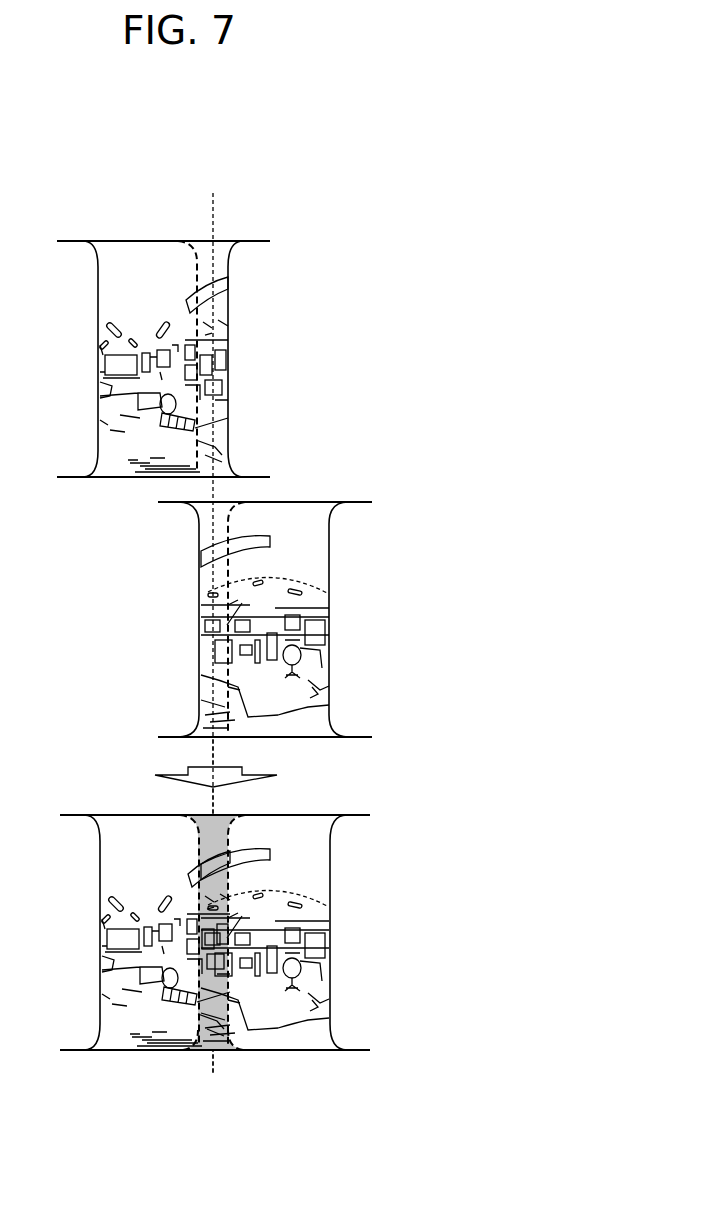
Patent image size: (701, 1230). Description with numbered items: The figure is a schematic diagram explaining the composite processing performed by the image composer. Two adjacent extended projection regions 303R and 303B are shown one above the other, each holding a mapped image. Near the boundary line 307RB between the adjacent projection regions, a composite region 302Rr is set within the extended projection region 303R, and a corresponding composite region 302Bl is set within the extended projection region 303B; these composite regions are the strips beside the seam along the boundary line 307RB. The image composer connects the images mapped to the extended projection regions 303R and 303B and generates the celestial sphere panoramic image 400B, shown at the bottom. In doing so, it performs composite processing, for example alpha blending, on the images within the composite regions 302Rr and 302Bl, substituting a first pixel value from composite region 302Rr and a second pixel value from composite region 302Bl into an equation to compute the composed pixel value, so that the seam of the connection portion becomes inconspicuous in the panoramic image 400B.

The extended projection region 303R is at (112, 240).
The boundary line 307RB is at (213, 208).
The composite region 302Rr is at (222, 267).
The extended projection region 303B is at (313, 500).
The composite region 302Bl is at (207, 525).
The celestial sphere panoramic image 400B is at (312, 809).